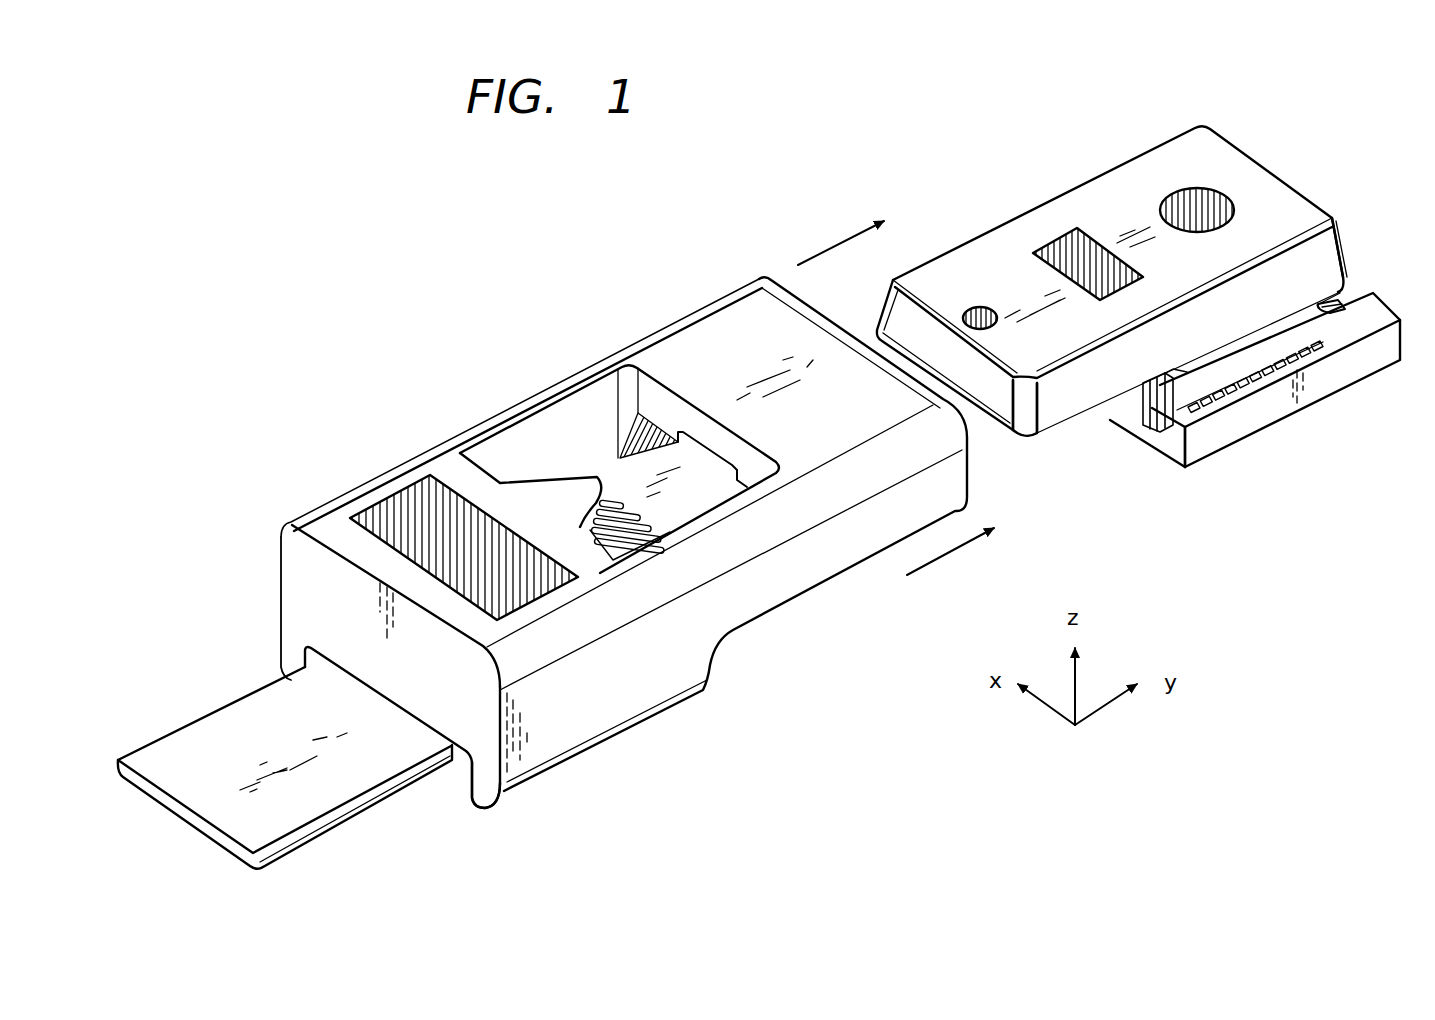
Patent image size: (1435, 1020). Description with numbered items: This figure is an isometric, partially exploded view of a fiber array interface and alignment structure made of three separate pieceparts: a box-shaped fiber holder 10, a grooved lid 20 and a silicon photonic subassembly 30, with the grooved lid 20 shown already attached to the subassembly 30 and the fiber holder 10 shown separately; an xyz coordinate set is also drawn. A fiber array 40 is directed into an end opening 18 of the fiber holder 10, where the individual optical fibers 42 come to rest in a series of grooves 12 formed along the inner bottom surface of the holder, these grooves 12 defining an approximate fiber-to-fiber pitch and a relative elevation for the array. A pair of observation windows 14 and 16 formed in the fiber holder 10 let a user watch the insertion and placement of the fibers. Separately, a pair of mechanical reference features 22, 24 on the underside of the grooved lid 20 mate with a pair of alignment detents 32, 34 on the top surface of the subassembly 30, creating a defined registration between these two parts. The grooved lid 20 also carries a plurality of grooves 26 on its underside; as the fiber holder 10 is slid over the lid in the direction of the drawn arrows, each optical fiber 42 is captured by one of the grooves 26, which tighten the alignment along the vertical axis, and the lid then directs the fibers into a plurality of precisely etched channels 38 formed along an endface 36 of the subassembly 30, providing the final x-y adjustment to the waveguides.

The fiber holder 10 is at (345, 453).
The grooves 12 is at (623, 543).
The observation window 14 is at (411, 505).
The observation window 16 is at (500, 457).
The end opening 18 is at (460, 777).
The grooved lid 20 is at (1076, 171).
The mechanical reference feature 22 is at (1332, 303).
The mechanical reference feature 24 is at (1245, 150).
The grooves 26 is at (1062, 428).
The silicon photonic subassembly 30 is at (1310, 417).
The alignment detent 32 is at (1343, 313).
The alignment detent 34 is at (1277, 170).
The endface 36 is at (1177, 450).
The etched channels 38 is at (1151, 412).
The fiber array 40 is at (211, 746).
The optical fibers 42 is at (617, 500).